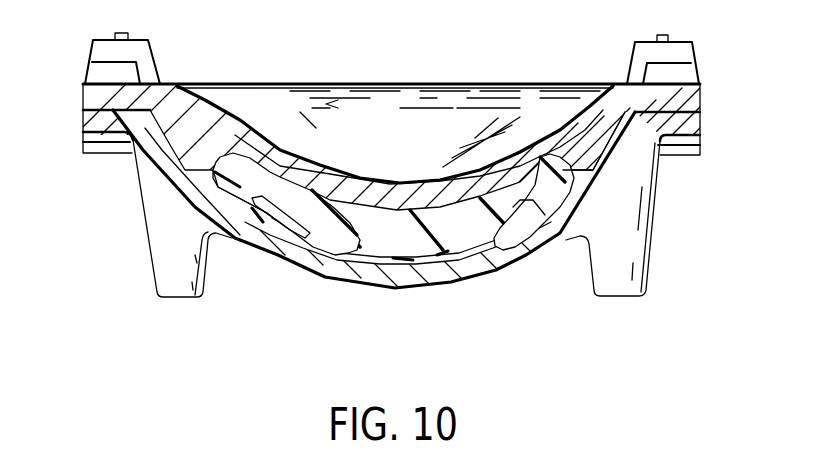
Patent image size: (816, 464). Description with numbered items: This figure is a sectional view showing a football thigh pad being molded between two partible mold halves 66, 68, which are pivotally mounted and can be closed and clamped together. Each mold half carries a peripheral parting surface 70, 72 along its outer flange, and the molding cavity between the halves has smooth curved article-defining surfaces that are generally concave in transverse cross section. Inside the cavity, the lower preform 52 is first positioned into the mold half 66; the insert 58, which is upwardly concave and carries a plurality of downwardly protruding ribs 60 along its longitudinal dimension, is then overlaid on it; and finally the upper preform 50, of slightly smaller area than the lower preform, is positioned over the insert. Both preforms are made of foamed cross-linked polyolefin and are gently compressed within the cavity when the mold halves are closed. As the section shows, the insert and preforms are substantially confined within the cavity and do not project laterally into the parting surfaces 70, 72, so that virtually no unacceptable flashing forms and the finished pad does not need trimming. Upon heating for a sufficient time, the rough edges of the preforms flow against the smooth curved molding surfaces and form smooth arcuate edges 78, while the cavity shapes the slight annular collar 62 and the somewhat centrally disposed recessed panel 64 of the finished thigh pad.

The upper preform 50 is at (410, 230).
The lower preform 52 is at (337, 268).
The insert 58 is at (525, 232).
The ribs 60 is at (450, 262).
The annular collar 62 is at (290, 135).
The recessed panel 64 is at (388, 195).
The mold half 66 is at (148, 155).
The mold half 68 is at (180, 113).
The parting surface 70 is at (597, 170).
The parting surface 72 is at (207, 176).
The smooth arcuate edges 78 is at (216, 160).